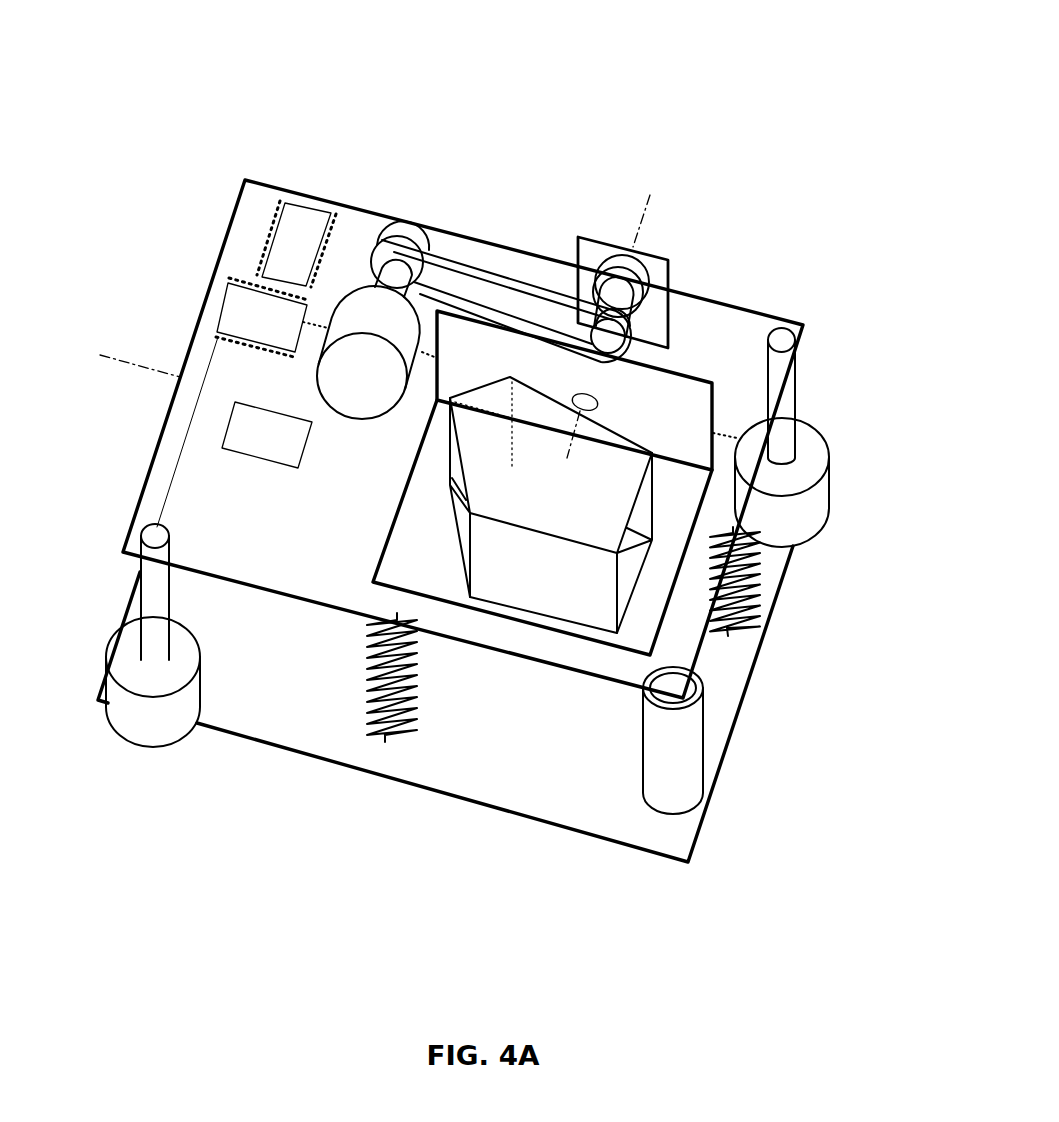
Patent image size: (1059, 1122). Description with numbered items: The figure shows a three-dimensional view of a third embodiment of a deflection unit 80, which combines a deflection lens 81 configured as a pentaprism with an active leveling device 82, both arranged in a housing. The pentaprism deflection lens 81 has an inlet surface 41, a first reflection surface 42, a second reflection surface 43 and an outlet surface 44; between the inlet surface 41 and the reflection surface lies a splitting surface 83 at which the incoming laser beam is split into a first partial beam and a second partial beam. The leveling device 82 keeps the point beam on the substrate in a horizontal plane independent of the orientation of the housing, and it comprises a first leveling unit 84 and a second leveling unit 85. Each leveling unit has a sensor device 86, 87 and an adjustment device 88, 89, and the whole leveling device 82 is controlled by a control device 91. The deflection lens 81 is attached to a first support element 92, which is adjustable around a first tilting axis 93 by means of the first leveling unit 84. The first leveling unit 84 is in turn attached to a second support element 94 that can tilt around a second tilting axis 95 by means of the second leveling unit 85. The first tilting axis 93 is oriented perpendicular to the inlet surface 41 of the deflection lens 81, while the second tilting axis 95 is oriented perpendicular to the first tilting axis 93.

The deflection unit 80 is at (675, 116).
The leveling device 82 is at (479, 177).
The second leveling unit 85 is at (320, 739).
The adjustment device 89 is at (153, 727).
The second support element 94 is at (297, 570).
The second tilting axis 95 is at (130, 362).
The sensor device 86 is at (305, 232).
The sensor device 87 is at (253, 308).
The control device 91 is at (265, 428).
The adjustment device 88 is at (400, 238).
The first leveling unit 84 is at (522, 268).
The first tilting axis 93 is at (650, 218).
The first support element 92 is at (423, 515).
The splitting surface 83 is at (587, 530).
The inlet surface 41 is at (550, 555).
The deflection lens 81 is at (550, 598).
The first reflection surface 42 is at (555, 434).
The second reflection surface 43 is at (463, 514).
The outlet surface 44 is at (633, 568).